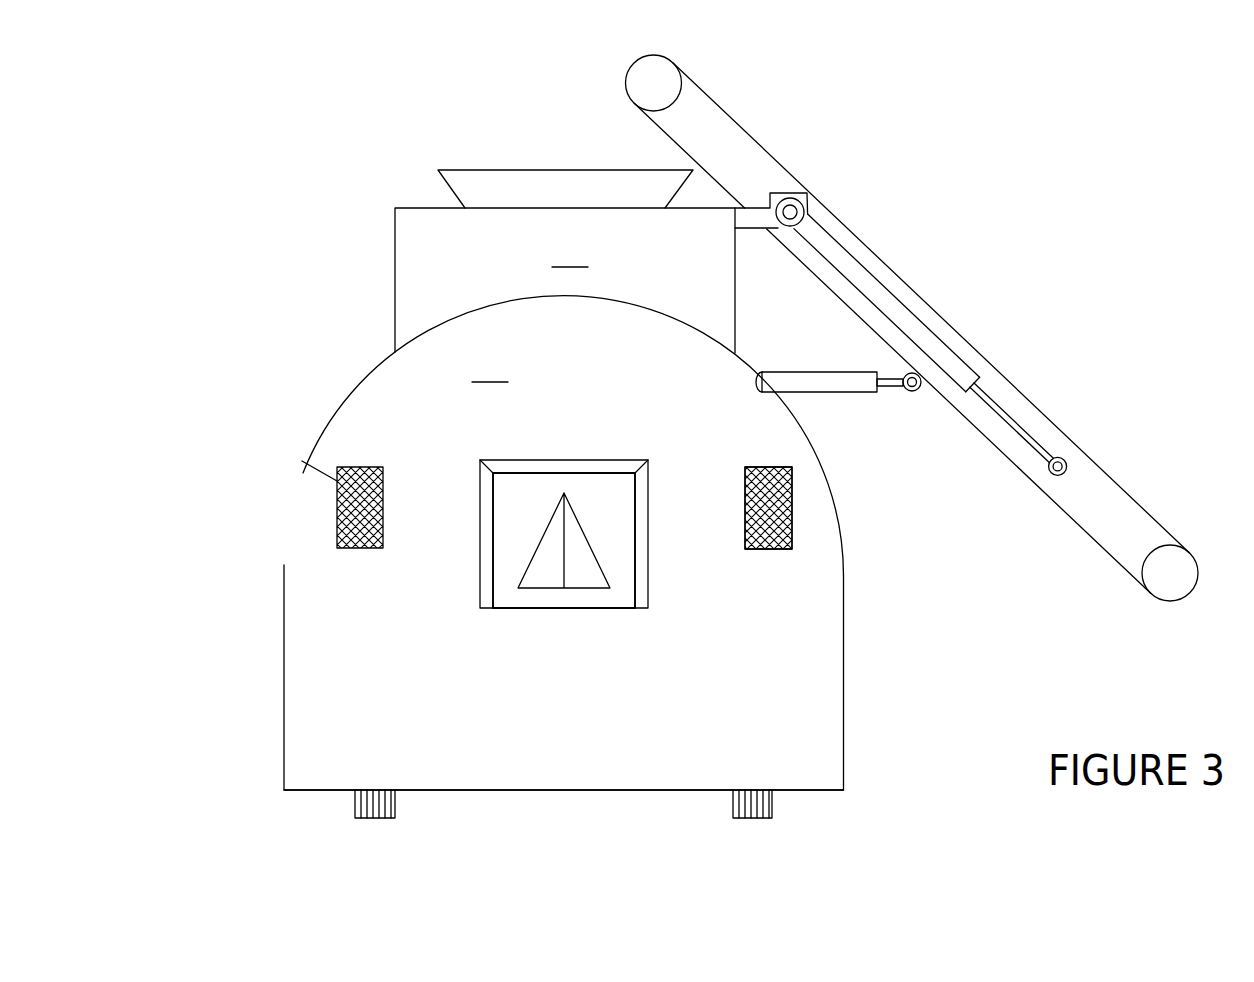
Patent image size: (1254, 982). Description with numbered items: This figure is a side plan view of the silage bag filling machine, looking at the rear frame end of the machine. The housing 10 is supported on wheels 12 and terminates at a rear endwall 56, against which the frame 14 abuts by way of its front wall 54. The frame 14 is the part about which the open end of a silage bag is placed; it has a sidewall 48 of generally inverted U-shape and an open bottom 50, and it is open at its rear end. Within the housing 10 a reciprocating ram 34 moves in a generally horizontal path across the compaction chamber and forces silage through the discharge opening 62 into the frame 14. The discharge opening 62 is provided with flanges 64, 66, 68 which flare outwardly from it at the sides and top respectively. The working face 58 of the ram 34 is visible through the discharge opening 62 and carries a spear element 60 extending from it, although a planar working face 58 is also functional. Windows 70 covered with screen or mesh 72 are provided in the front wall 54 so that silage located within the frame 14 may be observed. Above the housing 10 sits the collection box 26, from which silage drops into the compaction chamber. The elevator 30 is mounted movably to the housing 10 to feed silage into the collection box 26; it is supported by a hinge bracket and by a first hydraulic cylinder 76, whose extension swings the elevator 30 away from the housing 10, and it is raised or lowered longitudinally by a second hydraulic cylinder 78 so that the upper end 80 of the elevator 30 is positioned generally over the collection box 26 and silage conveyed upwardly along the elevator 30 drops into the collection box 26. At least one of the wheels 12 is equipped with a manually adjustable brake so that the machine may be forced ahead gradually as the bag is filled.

The housing 10 is at (560, 509).
The wheels 12 is at (570, 838).
The frame 14 is at (898, 655).
The collection box 26 is at (563, 157).
The elevator 30 is at (908, 324).
The reciprocating ram 34 is at (618, 540).
The sidewall 48 is at (529, 436).
The open bottom 50 is at (564, 843).
The front wall 54 is at (491, 367).
The rear endwall 56 is at (565, 280).
The working face 58 is at (522, 522).
The spear element 60 is at (532, 584).
The discharge opening 62 is at (608, 500).
The flange 64 is at (440, 560).
The flange 66 is at (697, 564).
The flange 68 is at (564, 416).
The windows 70 is at (585, 548).
The screen or mesh 72 is at (831, 503).
The first hydraulic cylinder 76 is at (843, 417).
The second hydraulic cylinder 78 is at (901, 325).
The upper end 80 is at (926, 300).